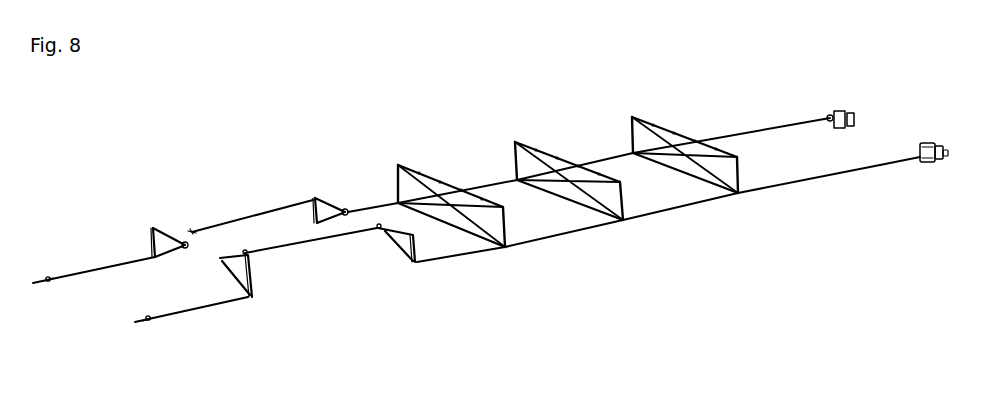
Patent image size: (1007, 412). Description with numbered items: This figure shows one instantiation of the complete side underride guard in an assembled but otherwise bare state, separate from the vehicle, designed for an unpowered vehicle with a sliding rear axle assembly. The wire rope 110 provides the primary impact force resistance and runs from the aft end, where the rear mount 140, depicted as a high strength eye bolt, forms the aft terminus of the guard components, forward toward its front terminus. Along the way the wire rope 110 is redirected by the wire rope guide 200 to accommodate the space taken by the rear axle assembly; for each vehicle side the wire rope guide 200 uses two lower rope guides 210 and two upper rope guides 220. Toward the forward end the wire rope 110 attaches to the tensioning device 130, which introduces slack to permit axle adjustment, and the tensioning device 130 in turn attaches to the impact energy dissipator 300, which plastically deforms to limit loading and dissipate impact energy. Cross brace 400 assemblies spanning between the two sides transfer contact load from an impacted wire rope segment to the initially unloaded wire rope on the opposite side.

The wire rope 110 is at (858, 173).
The tensioning device 130 is at (905, 165).
The rear mount 140 is at (136, 323).
The wire rope guide 200 is at (400, 263).
The lower rope guide 210 is at (328, 200).
The upper rope guide 220 is at (325, 206).
The impact energy dissipator 300 is at (929, 169).
The cross brace 400 is at (418, 167).